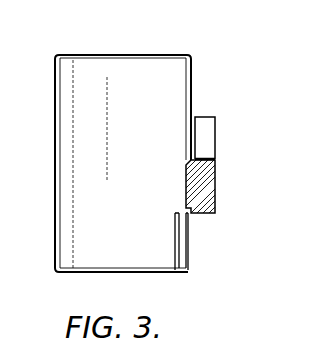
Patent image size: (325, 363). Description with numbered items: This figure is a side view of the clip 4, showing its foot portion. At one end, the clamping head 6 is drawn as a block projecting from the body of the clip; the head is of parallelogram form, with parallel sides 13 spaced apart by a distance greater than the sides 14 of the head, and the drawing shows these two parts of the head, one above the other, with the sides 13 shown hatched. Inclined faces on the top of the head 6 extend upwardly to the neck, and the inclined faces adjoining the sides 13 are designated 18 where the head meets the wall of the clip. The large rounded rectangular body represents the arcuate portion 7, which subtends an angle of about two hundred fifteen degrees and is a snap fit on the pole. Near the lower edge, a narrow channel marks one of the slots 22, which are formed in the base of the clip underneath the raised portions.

The clip 4 is at (197, 72).
The clamping head 6 is at (212, 148).
The arcuate portion 7 is at (103, 262).
The parallel sides 13 is at (208, 173).
The sides 14 is at (208, 137).
The inclined faces 18 is at (193, 116).
The slots 22 is at (183, 258).